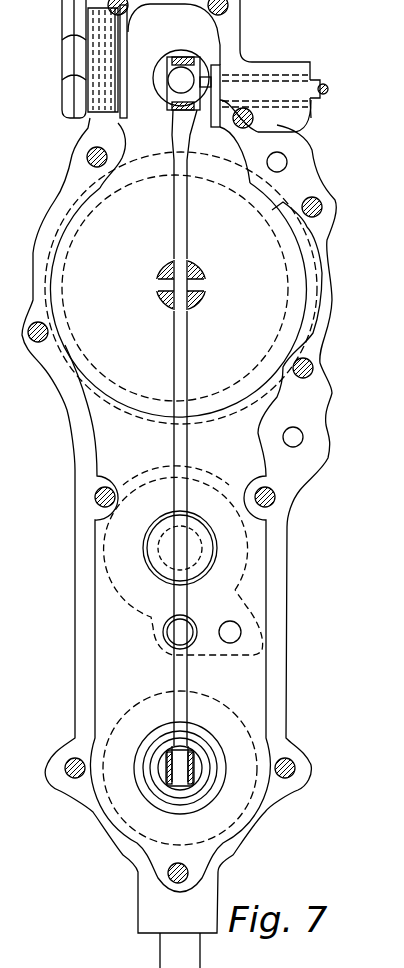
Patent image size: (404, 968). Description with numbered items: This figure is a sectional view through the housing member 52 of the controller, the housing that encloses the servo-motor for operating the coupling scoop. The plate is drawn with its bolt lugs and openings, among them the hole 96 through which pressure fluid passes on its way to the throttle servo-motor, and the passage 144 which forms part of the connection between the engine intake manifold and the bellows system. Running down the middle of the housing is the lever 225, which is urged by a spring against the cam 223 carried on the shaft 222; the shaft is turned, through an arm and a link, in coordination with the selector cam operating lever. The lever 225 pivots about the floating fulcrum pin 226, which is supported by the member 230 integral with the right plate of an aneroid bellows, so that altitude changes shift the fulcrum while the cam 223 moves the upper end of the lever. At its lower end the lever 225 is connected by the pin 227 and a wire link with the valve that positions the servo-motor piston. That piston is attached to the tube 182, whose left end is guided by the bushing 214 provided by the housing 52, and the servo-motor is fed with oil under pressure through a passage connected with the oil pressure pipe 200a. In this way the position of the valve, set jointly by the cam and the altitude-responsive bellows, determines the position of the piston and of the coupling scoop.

The housing member 52 is at (58, 204).
The hole 96 is at (295, 437).
The passage 144 is at (280, 162).
The tube 182 is at (158, 752).
The oil pressure pipe 200a is at (160, 957).
The bushing 214 is at (207, 742).
The shaft 222 is at (328, 89).
The cam 223 is at (184, 57).
The lever 225 is at (173, 135).
The floating fulcrum pin 226 is at (160, 283).
The pin 227 is at (167, 770).
The member 230 is at (163, 300).